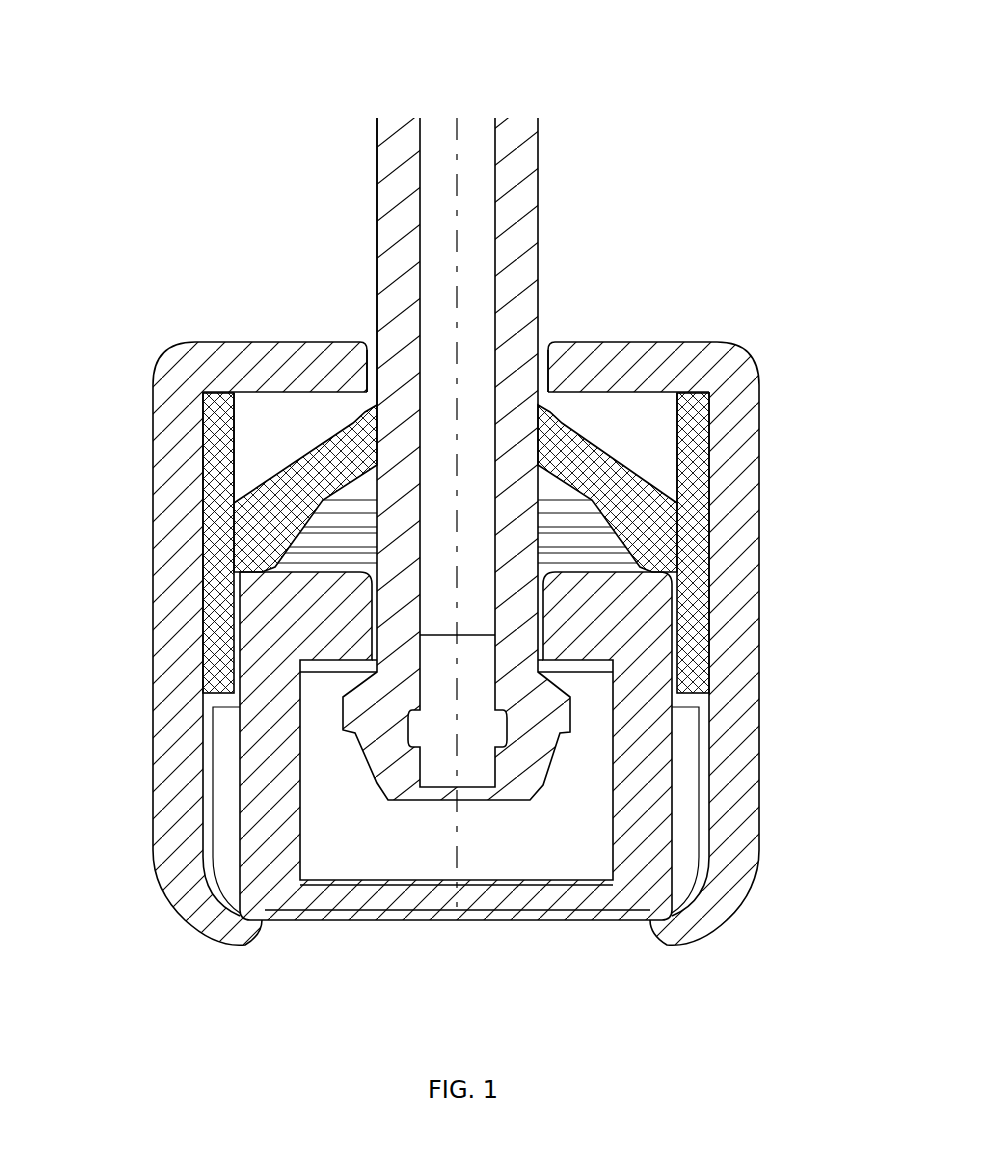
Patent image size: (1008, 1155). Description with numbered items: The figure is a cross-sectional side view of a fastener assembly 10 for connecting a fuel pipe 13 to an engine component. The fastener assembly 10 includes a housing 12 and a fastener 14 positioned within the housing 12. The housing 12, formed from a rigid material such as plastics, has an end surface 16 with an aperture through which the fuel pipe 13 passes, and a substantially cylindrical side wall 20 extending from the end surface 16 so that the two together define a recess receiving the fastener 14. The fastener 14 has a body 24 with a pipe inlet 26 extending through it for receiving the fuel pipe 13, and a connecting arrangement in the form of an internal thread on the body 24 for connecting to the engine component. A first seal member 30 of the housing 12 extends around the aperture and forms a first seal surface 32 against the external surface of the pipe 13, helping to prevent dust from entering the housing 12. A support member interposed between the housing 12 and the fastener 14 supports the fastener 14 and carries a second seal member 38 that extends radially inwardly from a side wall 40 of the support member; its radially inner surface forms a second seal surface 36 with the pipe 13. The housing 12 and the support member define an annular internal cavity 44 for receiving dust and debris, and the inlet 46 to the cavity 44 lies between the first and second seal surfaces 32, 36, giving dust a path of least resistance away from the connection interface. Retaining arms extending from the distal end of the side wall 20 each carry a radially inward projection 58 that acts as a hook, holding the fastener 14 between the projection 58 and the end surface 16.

The fastener assembly 10 is at (471, 474).
The housing 12 is at (750, 393).
The fuel pipe 13 is at (517, 253).
The fastener 14 is at (260, 723).
The end surface 16 is at (290, 367).
The side wall 20 is at (162, 556).
The body 24 is at (627, 598).
The pipe inlet 26 is at (370, 587).
The first seal member 30 is at (543, 367).
The first seal surface 32 is at (378, 367).
The second seal surface 36 is at (551, 402).
The second seal member 38 is at (638, 496).
The side wall of the support member 40 is at (215, 616).
The internal cavity 44 is at (260, 432).
The inlet 46 is at (344, 403).
The projection 58 is at (218, 922).